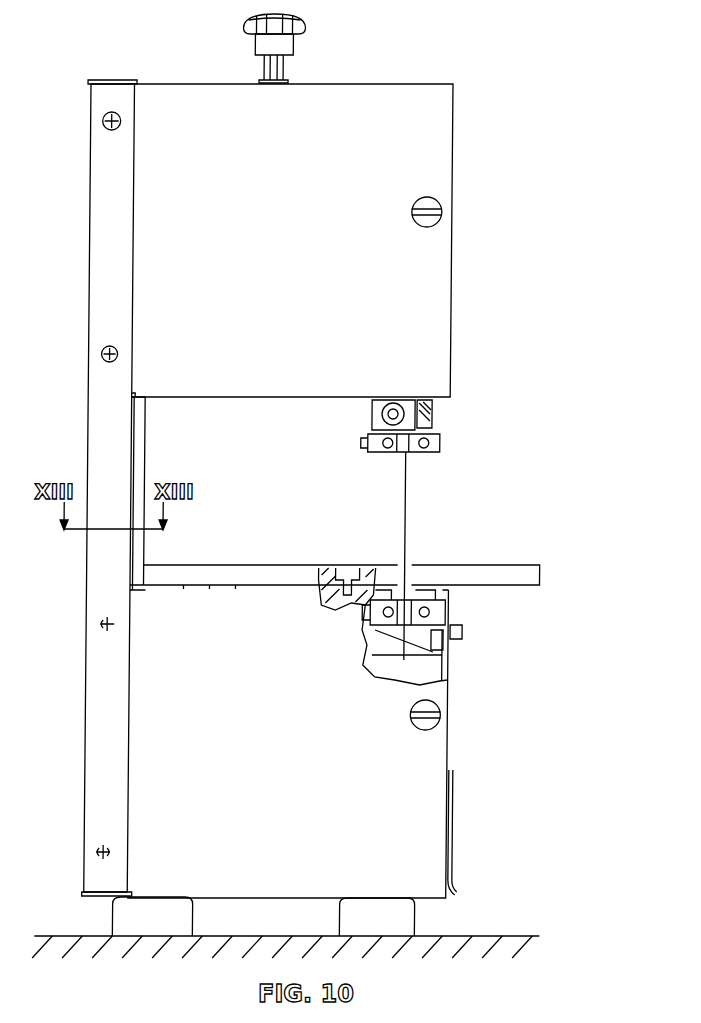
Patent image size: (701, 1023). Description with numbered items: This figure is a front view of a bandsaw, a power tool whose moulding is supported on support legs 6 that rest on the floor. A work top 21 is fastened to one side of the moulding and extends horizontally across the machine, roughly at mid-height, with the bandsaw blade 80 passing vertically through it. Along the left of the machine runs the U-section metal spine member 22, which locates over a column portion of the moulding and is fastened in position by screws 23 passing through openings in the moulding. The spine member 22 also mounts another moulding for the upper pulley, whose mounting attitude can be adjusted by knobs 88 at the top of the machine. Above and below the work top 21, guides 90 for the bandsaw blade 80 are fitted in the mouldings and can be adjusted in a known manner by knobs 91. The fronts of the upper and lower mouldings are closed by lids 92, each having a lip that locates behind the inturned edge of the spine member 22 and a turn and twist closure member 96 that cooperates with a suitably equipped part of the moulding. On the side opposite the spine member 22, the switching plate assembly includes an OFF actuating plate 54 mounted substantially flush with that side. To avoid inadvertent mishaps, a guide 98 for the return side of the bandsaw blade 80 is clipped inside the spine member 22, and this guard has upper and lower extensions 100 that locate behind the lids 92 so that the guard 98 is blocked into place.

The support legs 6 is at (135, 915).
The work top 21 is at (515, 568).
The spine member 22 is at (105, 582).
The screws 23 is at (120, 127).
The OFF actuating plate 54 is at (462, 828).
The bandsaw blade 80 is at (411, 509).
The knobs 88 is at (255, 18).
The guides 90 is at (390, 416).
The knobs 91 is at (437, 412).
The lids 92 is at (308, 258).
The turn and twist closure member 96 is at (443, 211).
The guide 98 is at (150, 470).
The upper and lower extensions 100 is at (138, 395).